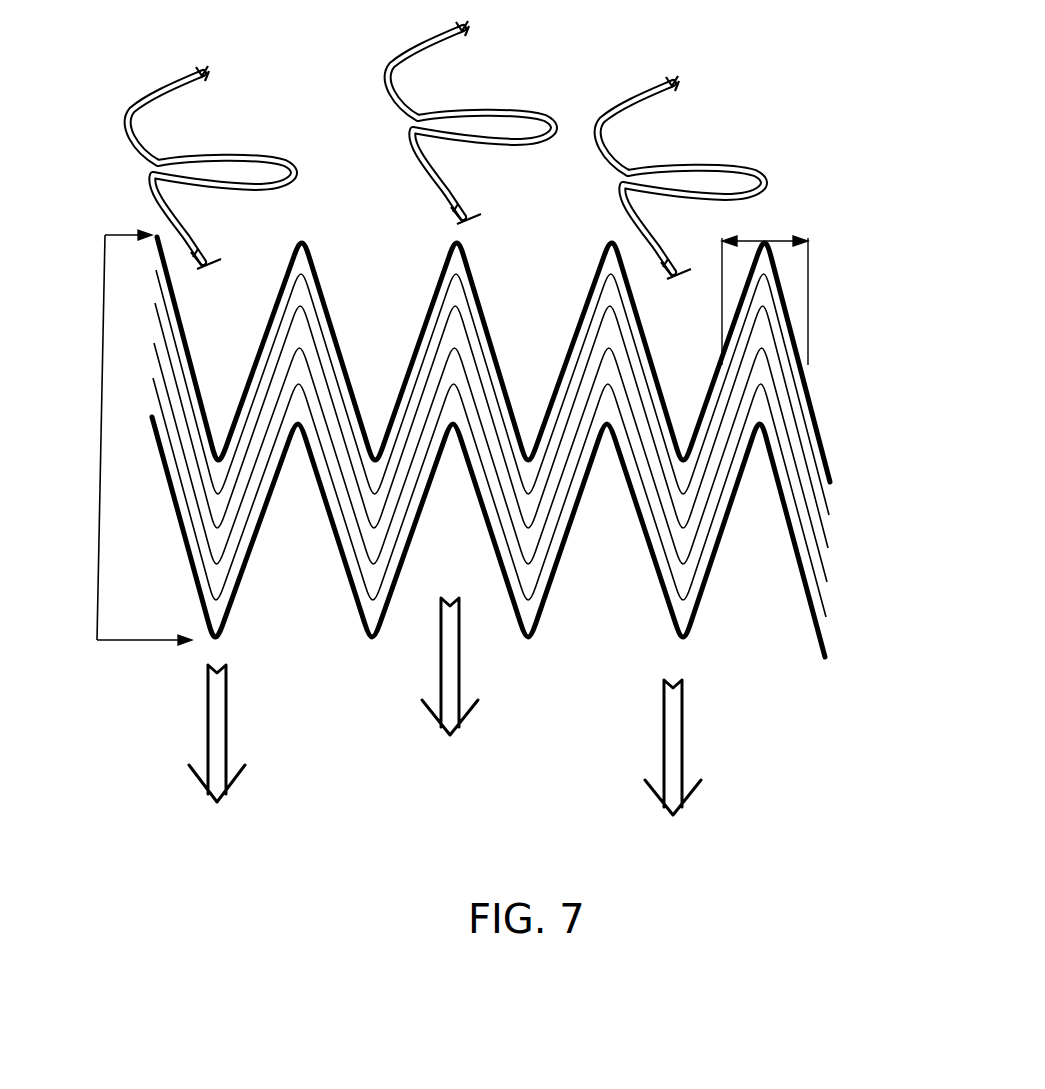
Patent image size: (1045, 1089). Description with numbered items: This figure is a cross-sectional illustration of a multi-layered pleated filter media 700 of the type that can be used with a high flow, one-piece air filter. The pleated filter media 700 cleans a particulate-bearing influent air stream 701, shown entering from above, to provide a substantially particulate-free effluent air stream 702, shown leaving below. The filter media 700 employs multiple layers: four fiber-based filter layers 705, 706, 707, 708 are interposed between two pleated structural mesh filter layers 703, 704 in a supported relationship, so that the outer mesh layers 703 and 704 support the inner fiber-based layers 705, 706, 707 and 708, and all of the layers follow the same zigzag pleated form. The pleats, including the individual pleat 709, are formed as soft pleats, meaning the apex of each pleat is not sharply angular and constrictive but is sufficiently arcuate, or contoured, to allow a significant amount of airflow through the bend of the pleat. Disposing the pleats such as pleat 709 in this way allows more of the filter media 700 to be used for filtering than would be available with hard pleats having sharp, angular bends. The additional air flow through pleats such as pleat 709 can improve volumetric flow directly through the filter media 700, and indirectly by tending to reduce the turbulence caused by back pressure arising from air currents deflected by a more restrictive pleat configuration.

The pleated filter media 700 is at (103, 470).
The particulate-bearing influent air stream 701 is at (537, 112).
The substantially particulate-free effluent air stream 702 is at (467, 653).
The pleated structural mesh filter layer 703 is at (813, 402).
The pleated structural mesh filter layer 704 is at (800, 573).
The fiber-based filter layer 705 is at (828, 505).
The fiber-based filter layer 706 is at (828, 538).
The fiber-based filter layer 707 is at (828, 578).
The fiber-based filter layer 708 is at (828, 610).
The pleat 709 is at (775, 237).